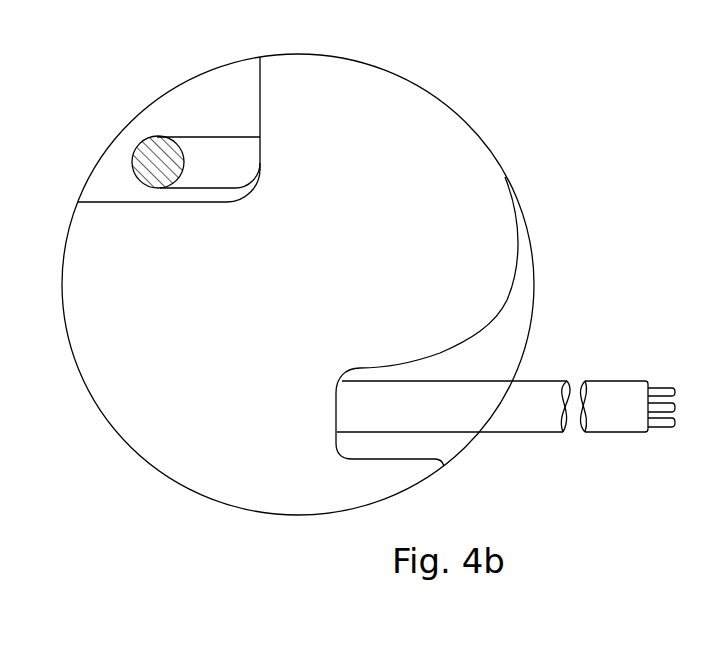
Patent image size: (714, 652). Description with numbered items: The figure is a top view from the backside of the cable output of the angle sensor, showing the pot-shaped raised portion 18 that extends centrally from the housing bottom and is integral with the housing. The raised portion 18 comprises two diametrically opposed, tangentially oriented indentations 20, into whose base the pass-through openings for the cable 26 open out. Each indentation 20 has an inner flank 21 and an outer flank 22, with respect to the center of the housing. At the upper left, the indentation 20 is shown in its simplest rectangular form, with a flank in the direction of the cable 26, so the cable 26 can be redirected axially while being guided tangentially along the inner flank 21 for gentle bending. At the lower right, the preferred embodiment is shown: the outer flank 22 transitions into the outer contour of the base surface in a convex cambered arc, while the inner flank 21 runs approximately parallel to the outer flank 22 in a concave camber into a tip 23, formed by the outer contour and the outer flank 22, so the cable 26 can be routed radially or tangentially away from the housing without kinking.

The raised portion 18 is at (298, 284).
The indentation 20 is at (401, 240).
The inner flank 21 is at (137, 202).
The outer flank 22 is at (260, 122).
The tip 23 is at (444, 466).
The cable 26 is at (403, 285).